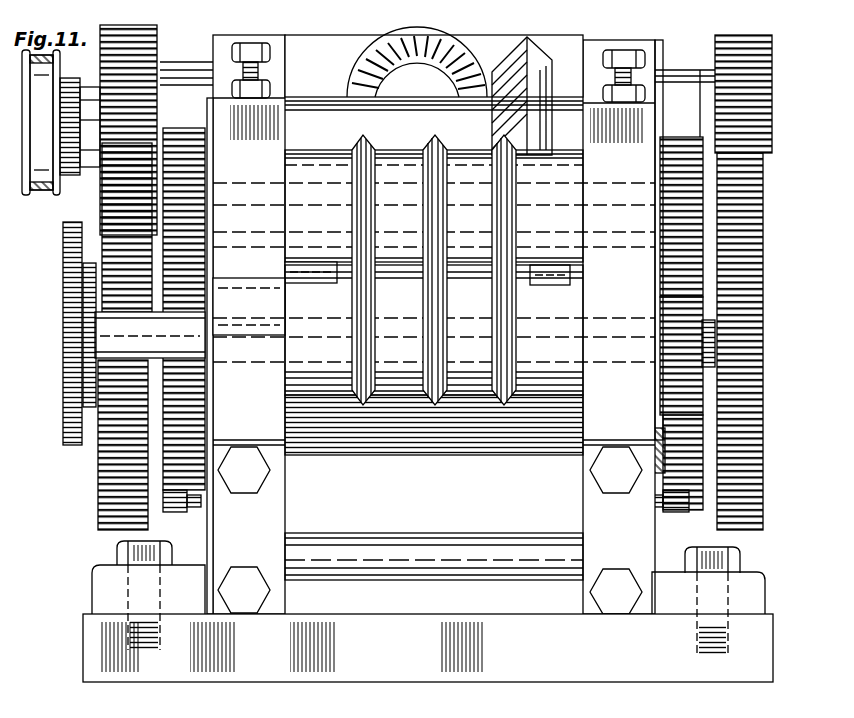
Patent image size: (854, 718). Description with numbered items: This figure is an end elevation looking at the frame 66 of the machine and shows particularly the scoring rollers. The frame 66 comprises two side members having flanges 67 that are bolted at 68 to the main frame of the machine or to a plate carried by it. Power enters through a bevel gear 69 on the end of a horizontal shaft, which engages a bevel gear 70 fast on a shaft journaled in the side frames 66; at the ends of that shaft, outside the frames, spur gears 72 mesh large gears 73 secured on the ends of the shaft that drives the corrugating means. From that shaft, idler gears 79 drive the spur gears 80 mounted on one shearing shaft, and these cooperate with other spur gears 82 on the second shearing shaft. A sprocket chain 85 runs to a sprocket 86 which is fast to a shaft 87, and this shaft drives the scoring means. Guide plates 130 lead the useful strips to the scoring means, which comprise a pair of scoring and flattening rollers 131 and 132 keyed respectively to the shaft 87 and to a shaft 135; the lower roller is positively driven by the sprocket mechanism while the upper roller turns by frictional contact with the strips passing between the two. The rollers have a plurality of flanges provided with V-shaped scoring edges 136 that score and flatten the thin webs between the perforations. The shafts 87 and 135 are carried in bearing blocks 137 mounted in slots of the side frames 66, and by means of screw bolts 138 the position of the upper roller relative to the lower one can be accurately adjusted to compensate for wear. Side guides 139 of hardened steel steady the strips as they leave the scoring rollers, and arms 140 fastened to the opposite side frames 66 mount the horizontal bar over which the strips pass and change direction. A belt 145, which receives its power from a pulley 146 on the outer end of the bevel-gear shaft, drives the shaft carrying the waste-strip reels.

The frame 66 is at (288, 522).
The flanges 67 is at (95, 592).
The bolts 68 is at (117, 553).
The bevel gear 69 is at (367, 70).
The bevel gear 70 is at (525, 67).
The spur gears 72 is at (156, 36).
The large gears 73 is at (103, 458).
The idler gears 79 is at (178, 496).
The spur gears 80 is at (160, 397).
The spur gears 82 is at (152, 195).
The sprocket chain 85 is at (63, 240).
The sprocket 86 is at (63, 318).
The shaft 87 is at (113, 364).
The guide plates 130 is at (347, 272).
The scoring and flattening roller 131 is at (460, 392).
The scoring and flattening roller 132 is at (398, 152).
The shaft 135 is at (657, 183).
The V-shaped scoring edges 136 is at (425, 151).
The bearing blocks 137 is at (288, 150).
The screw bolts 138 is at (249, 43).
The side guides 139 is at (312, 245).
The arms 140 is at (203, 480).
The belt 145 is at (38, 192).
The pulley 146 is at (80, 113).